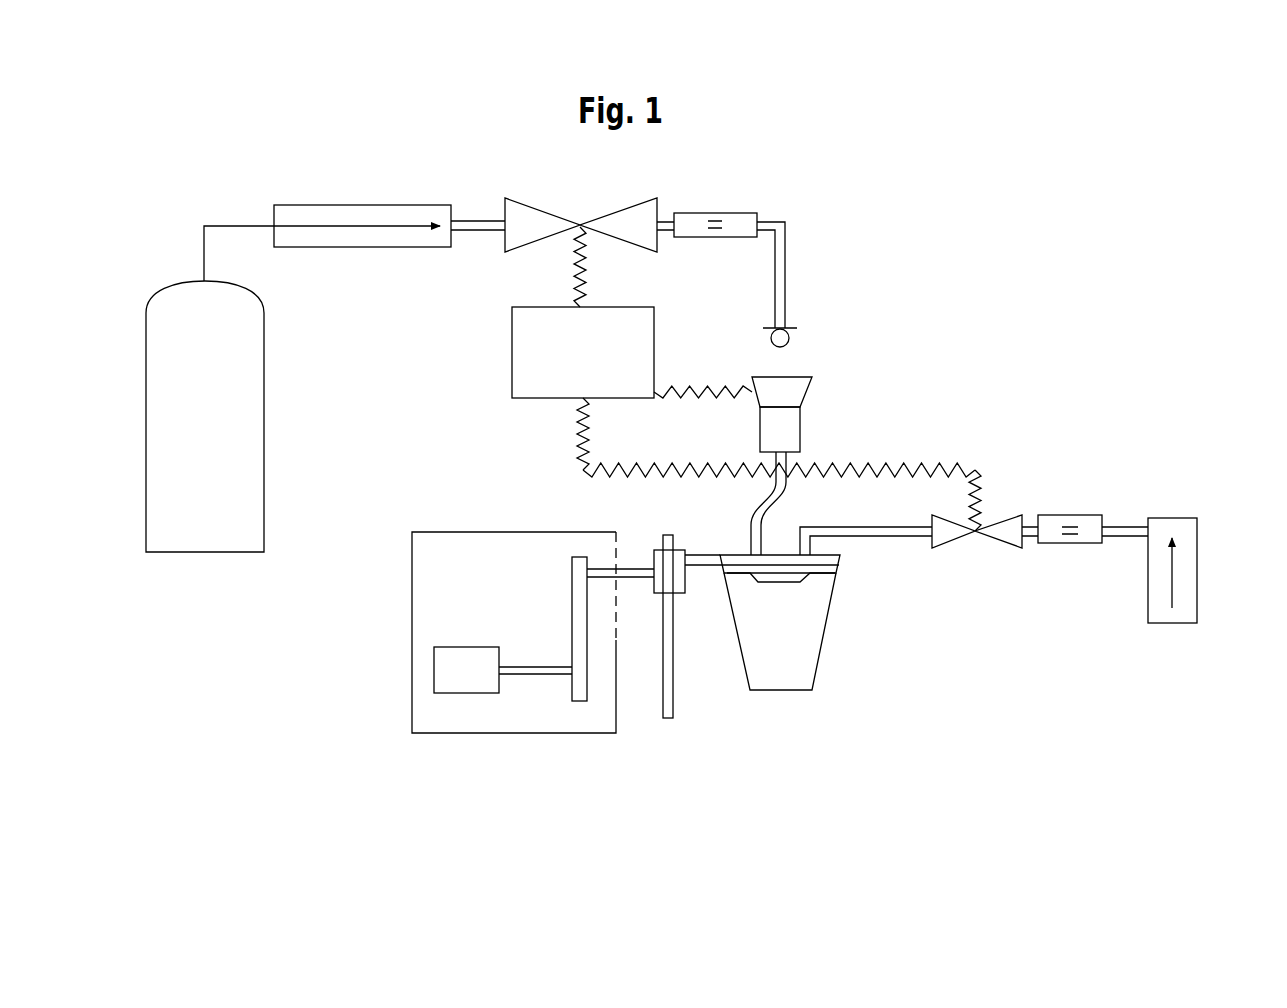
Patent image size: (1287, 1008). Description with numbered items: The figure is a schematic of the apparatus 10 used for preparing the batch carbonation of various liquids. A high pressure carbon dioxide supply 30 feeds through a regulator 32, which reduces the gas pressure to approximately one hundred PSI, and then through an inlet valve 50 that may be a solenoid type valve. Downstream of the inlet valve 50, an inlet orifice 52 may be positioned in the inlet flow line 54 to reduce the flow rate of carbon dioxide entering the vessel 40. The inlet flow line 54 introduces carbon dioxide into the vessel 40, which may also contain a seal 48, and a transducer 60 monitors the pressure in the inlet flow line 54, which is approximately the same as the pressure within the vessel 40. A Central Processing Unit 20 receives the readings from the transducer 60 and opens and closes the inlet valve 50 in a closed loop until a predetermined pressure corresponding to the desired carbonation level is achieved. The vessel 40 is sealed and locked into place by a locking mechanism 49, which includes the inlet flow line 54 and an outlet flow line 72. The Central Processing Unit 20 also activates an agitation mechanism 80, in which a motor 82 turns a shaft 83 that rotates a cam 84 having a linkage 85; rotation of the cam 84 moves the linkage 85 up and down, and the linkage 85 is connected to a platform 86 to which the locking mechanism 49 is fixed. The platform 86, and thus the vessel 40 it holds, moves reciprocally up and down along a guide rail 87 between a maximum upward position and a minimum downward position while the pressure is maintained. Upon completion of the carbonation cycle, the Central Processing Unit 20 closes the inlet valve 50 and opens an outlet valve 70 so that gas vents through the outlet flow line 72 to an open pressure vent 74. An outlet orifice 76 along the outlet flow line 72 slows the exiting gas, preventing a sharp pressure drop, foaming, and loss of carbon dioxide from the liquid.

The apparatus 10 is at (920, 266).
The Central Processing Unit 20 is at (509, 359).
The high pressure carbon dioxide supply 30 is at (226, 557).
The regulator 32 is at (340, 201).
The vessel 40 is at (806, 634).
The seal 48 is at (824, 582).
The locking mechanism 49 is at (836, 558).
The inlet valve 50 is at (577, 221).
The inlet orifice 52 is at (763, 213).
The inlet flow line 54 is at (789, 287).
The transducer 60 is at (804, 424).
The outlet valve 70 is at (986, 514).
The outlet flow line 72 is at (831, 526).
The open pressure vent 74 is at (1185, 569).
The outlet orifice 76 is at (1072, 545).
The agitation mechanism 80 is at (510, 624).
The motor 82 is at (446, 644).
The shaft 83 is at (538, 682).
The cam 84 is at (567, 570).
The linkage 85 is at (598, 562).
The platform 86 is at (656, 599).
The guide rail 87 is at (673, 713).